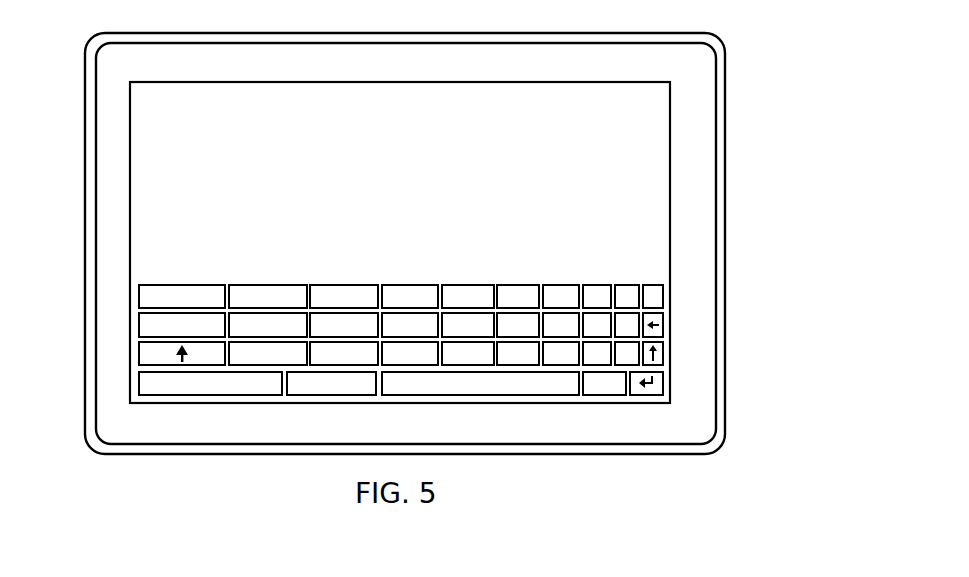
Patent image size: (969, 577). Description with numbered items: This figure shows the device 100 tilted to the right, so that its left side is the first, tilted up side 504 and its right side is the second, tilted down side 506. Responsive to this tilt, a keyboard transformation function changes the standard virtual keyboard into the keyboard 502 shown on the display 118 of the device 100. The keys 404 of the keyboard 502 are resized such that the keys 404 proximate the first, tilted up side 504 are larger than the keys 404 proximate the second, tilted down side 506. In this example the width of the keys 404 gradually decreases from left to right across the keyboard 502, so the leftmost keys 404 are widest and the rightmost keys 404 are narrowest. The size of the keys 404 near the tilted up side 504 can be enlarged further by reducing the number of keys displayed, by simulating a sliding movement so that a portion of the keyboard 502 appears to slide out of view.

The device 100 is at (692, 486).
The display / touch screen 118 is at (657, 148).
The keys 404 is at (348, 285).
The keyboard 502 is at (459, 306).
The first, tilted up side 504 is at (85, 140).
The second, tilted down side 506 is at (727, 85).